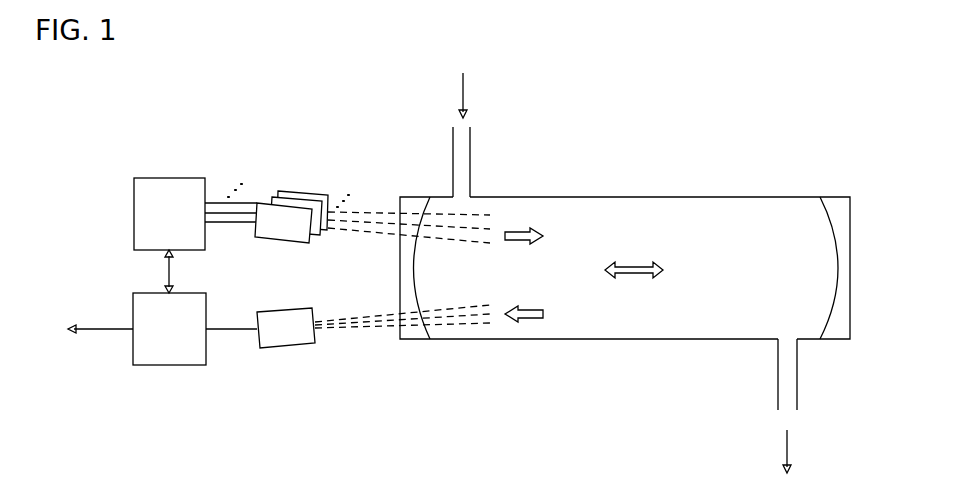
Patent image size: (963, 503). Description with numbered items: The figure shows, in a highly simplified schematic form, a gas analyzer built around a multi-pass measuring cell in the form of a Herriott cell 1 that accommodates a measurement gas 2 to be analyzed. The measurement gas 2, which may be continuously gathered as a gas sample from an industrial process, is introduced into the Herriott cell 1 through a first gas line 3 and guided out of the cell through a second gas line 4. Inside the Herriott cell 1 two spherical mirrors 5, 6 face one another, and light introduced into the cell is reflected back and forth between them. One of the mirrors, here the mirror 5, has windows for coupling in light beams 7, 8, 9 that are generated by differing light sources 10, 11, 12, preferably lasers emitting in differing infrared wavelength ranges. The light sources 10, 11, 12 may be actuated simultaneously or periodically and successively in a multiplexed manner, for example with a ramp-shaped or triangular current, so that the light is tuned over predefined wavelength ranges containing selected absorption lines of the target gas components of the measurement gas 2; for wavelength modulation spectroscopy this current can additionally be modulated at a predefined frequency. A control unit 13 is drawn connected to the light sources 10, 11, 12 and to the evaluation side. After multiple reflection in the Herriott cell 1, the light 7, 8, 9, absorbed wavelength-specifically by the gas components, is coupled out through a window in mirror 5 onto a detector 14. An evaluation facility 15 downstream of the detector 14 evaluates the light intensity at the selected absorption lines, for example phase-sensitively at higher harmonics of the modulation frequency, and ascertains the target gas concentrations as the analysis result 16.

The Herriott cell 1 is at (633, 197).
The measurement gas 2 is at (465, 100).
The first gas line 3 is at (472, 157).
The second gas line 4 is at (798, 383).
The spherical mirror 5 is at (412, 343).
The spherical mirror 6 is at (830, 197).
The light beam 7 is at (371, 212).
The light beam 8 is at (347, 229).
The light beam 9 is at (383, 236).
The light source 10 is at (315, 193).
The light source 11 is at (277, 193).
The light source 12 is at (282, 244).
The laser control unit 13 is at (170, 178).
The detector 14 is at (282, 348).
The evaluation facility 15 is at (166, 366).
The analysis result 16 is at (97, 327).